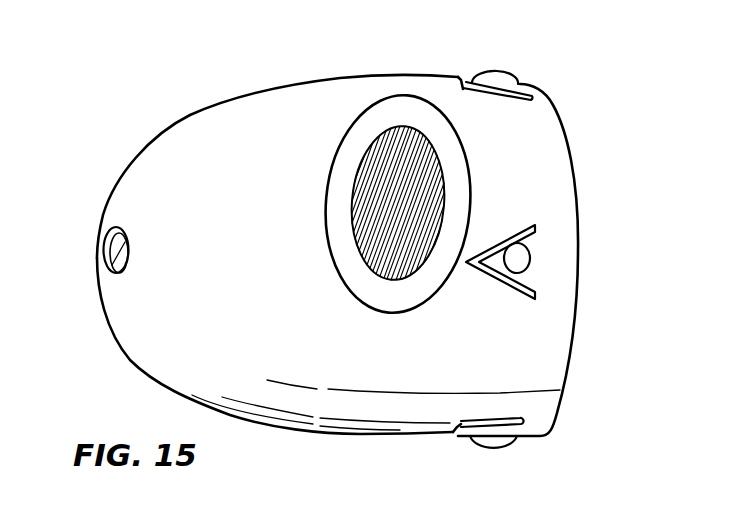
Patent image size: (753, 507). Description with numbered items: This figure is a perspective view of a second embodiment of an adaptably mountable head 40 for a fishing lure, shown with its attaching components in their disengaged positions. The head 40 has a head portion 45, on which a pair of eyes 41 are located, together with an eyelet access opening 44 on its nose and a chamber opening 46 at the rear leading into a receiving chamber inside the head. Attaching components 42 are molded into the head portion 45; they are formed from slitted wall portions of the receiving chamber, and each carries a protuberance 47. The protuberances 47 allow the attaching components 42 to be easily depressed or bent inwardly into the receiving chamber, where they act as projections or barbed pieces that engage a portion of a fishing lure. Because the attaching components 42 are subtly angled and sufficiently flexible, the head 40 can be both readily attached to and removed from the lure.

The adaptably mountable head 40 is at (163, 89).
The eyes 41 is at (400, 147).
The attaching components 42 is at (520, 85).
The eyelet access opening 44 is at (108, 252).
The head portion 45 is at (265, 110).
The chamber opening 46 is at (590, 328).
The protuberances 47 is at (493, 75).